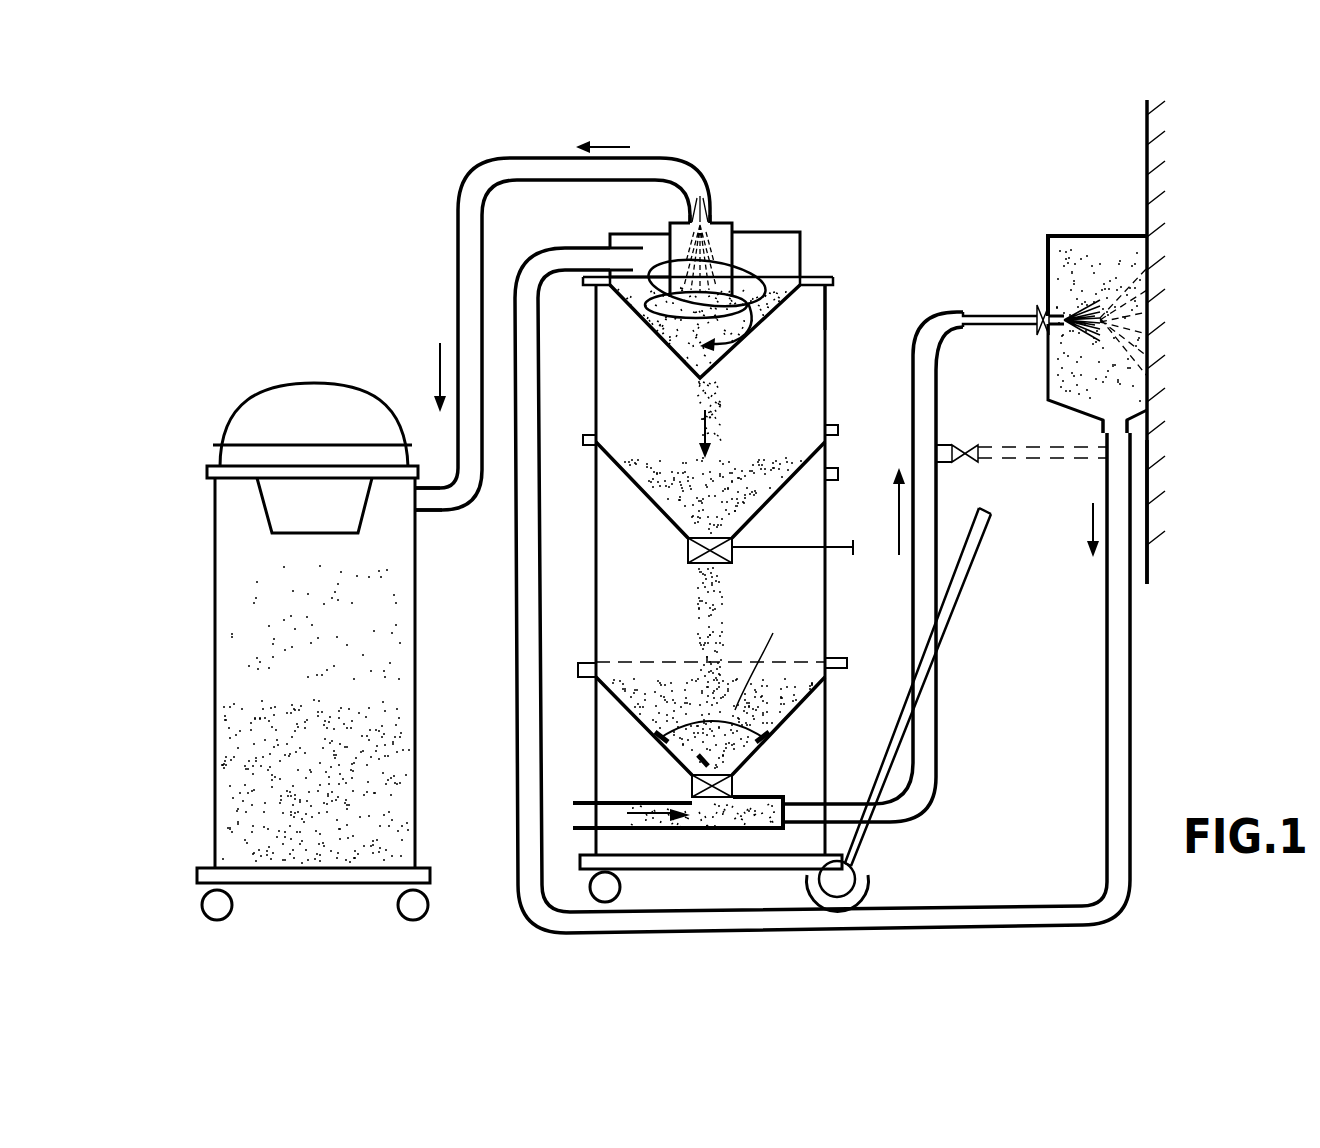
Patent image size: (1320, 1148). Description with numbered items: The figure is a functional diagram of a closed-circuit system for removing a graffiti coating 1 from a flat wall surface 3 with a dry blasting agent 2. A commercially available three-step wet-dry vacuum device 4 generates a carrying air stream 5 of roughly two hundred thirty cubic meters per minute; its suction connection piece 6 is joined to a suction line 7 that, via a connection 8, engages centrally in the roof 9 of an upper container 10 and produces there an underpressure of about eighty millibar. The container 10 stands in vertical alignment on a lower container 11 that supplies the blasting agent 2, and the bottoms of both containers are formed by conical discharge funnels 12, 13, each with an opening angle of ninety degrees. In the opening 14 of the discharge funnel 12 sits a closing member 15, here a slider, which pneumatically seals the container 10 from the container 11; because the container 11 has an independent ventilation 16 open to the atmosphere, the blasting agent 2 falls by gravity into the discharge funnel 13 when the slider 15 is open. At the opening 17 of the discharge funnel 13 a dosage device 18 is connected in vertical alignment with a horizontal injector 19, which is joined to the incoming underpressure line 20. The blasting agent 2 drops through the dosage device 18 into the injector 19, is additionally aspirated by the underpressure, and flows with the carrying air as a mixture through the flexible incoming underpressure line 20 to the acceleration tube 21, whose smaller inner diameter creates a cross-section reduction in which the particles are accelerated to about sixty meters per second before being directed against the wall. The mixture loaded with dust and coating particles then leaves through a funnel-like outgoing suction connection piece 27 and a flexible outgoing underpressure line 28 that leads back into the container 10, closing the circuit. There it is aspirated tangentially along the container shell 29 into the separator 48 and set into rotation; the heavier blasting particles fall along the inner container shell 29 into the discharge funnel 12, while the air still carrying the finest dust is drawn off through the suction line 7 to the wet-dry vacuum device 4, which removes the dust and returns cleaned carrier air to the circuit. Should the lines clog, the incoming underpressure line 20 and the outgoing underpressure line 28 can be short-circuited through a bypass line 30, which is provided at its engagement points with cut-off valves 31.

The graffiti coating 1 is at (1162, 140).
The dry blasting agent 2 is at (1148, 303).
The flat wall surface 3 is at (1158, 510).
The three-step wet-dry vacuum device 4 is at (238, 636).
The carrying air stream 5 is at (660, 818).
The suction connection piece 6 is at (419, 511).
The suction line 7 is at (470, 178).
The connection 8 is at (718, 200).
The roof 9 is at (785, 232).
The container 10 is at (596, 318).
The container 11 is at (826, 590).
The conical discharge funnel 12 is at (633, 483).
The conical discharge funnel 13 is at (650, 698).
The opening 14 is at (717, 534).
The closing member 15 is at (686, 548).
The independent ventilation 16 is at (838, 475).
The opening 17 is at (690, 756).
The dosage device 18 is at (690, 784).
The horizontal injector 19 is at (617, 815).
The incoming underpressure line 20 is at (937, 740).
The acceleration tube 21 is at (985, 312).
The outgoing suction connection piece 27 is at (1130, 426).
The outgoing underpressure line 28 is at (1131, 743).
The container shell 29 is at (828, 325).
The line 30 is at (1042, 459).
The cut-off valves 31 is at (965, 445).
The separator 48 is at (662, 339).